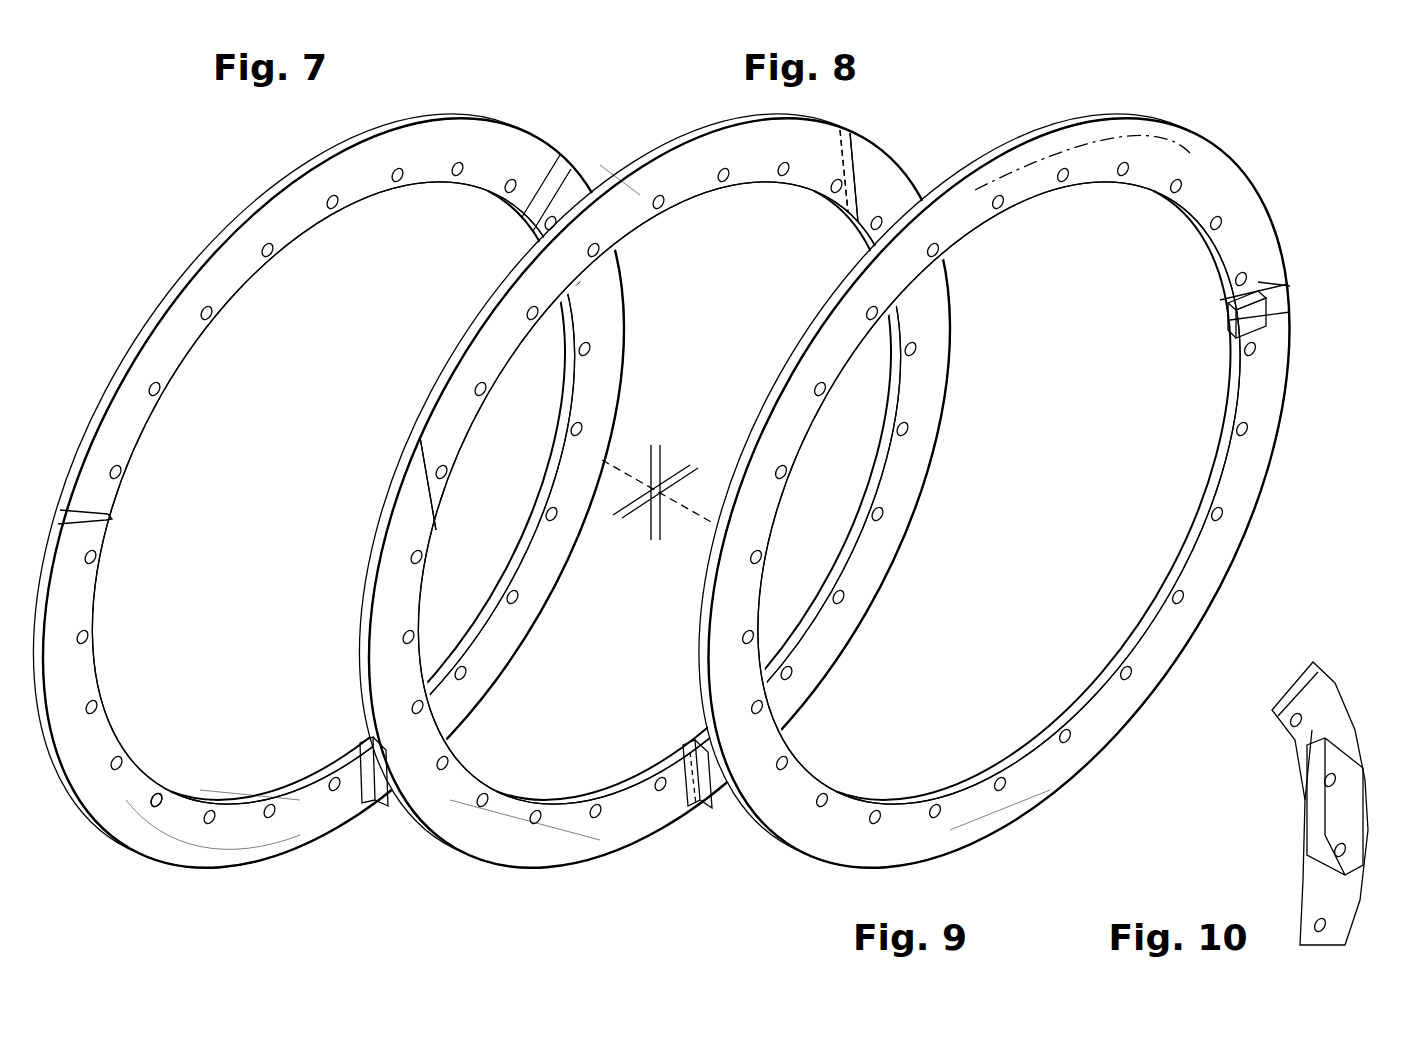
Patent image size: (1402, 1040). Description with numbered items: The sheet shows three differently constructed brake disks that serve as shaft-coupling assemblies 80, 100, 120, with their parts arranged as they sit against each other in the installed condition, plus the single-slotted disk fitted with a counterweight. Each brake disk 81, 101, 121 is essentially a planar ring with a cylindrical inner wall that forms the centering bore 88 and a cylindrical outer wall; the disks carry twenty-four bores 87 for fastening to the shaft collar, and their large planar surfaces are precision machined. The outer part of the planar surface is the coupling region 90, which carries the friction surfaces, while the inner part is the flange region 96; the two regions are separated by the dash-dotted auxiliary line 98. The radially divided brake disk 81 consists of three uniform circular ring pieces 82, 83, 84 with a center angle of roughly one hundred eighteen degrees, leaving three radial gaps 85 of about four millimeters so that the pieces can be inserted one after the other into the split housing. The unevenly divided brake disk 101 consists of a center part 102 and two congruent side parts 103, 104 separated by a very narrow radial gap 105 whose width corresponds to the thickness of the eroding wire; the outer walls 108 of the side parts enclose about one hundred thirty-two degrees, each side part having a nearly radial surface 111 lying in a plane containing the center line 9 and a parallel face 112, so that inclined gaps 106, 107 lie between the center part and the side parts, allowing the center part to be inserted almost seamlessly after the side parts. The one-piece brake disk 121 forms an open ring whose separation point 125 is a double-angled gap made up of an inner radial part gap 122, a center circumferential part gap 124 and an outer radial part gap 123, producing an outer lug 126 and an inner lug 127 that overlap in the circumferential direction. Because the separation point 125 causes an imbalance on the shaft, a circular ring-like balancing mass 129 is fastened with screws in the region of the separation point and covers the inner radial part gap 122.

In FIG. 7, the shaft-coupling assembly 80 is at (108, 847).
In FIG. 7, the brake disk 81 is at (175, 277).
In FIG. 7, the circular ring piece 82 is at (173, 341).
In FIG. 7, the circular ring piece 83 is at (193, 848).
In FIG. 7, the circular ring piece 84 is at (382, 787).
In FIG. 7, the radial gap 85 is at (368, 775).
In FIG. 7, the bore 87 is at (153, 807).
In FIG. 7, the centering bore 88 is at (257, 797).
In FIG. 8, the shaft-coupling assembly 100 is at (483, 865).
In FIG. 8, the brake disk 101 is at (655, 143).
In FIG. 8, the brake disk piece 102 is at (700, 162).
In FIG. 8, the brake disk piece 103 is at (523, 845).
In FIG. 8, the brake disk piece 104 is at (707, 780).
In FIG. 8, the radial gap 105 is at (693, 800).
In FIG. 8, the inclined gap 106 is at (428, 477).
In FIG. 8, the inclined gap 107 is at (853, 177).
In FIG. 8, the outer wall 108 is at (620, 180).
In FIG. 8, the radial surface 111 is at (687, 787).
In FIG. 8, the parallel face 112 is at (850, 133).
In FIG. 8, the center line 9 is at (690, 512).
In FIG. 9, the shaft-coupling assembly 120 is at (830, 878).
In FIG. 9, the brake disk 121 is at (998, 838).
In FIG. 10, the brake disk 121 is at (1305, 740).
In FIG. 9, the coupling region 90 is at (1096, 133).
In FIG. 9, the flange region 96 is at (1148, 178).
In FIG. 9, the auxiliary line 98 is at (1061, 148).
In FIG. 9, the inner radial part gap 122 is at (1238, 312).
In FIG. 9, the outer radial part gap 123 is at (1225, 313).
In FIG. 9, the center circumferential part gap 124 is at (1272, 317).
In FIG. 9, the separation point 125 is at (1212, 296).
In FIG. 9, the outer lug 126 is at (1270, 283).
In FIG. 9, the inner lug 127 is at (1248, 325).
In FIG. 10, the balancing mass 129 is at (1337, 808).